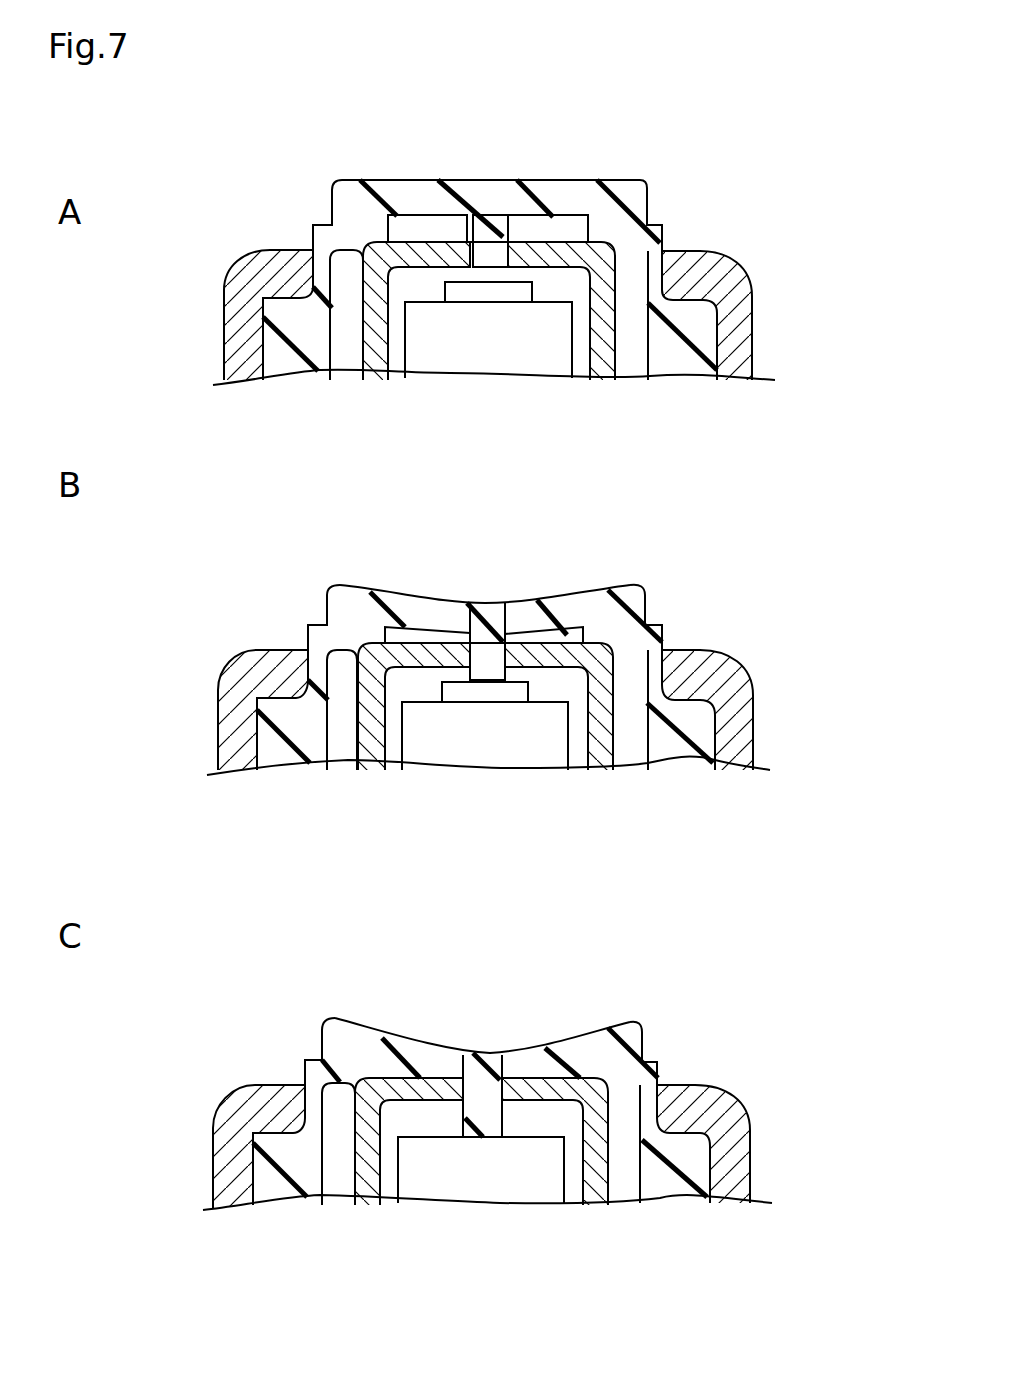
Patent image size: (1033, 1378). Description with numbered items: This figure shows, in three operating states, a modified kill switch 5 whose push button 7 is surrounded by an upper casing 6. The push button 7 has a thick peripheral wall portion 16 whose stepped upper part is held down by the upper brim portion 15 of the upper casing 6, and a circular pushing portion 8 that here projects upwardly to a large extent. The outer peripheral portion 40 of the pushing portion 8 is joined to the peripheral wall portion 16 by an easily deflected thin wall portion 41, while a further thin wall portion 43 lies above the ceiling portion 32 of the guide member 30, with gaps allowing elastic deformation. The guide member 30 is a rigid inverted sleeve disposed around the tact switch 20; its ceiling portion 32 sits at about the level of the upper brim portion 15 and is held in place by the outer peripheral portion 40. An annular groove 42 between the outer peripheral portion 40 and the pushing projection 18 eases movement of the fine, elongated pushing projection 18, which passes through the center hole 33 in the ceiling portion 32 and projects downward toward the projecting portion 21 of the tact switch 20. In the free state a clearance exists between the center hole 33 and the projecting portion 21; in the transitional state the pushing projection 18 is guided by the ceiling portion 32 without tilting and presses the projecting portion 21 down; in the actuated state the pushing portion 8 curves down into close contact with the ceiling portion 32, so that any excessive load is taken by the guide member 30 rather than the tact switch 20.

The kill switch 5 is at (683, 137).
The upper casing 6 is at (222, 347).
The push button 7 is at (312, 190).
The pushing portion 8 is at (470, 178).
The upper brim portion 15 is at (292, 263).
The peripheral wall portion 16 is at (710, 350).
The pushing projection 18 is at (493, 260).
The tact switch 20 is at (528, 340).
The projecting portion 21 is at (448, 252).
The guide member 30 is at (362, 334).
The ceiling portion 32 is at (353, 193).
The center hole 33 is at (465, 288).
The outer peripheral portion 40 is at (655, 197).
The thin wall portion 41 is at (667, 248).
The annular groove 42 is at (545, 222).
The thin wall portion 43 is at (608, 232).